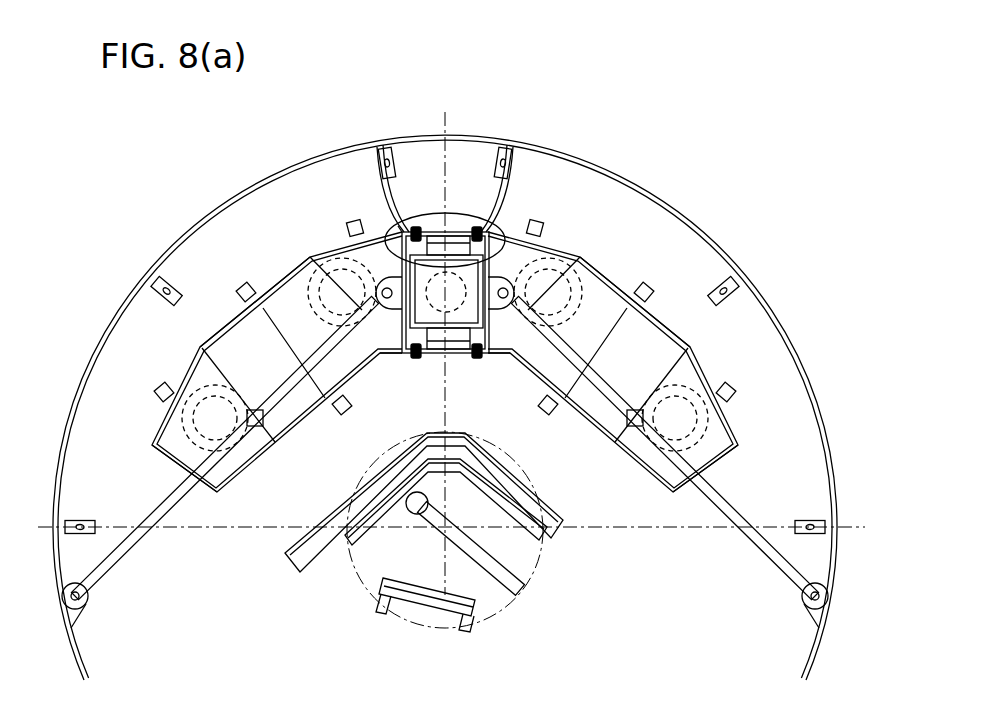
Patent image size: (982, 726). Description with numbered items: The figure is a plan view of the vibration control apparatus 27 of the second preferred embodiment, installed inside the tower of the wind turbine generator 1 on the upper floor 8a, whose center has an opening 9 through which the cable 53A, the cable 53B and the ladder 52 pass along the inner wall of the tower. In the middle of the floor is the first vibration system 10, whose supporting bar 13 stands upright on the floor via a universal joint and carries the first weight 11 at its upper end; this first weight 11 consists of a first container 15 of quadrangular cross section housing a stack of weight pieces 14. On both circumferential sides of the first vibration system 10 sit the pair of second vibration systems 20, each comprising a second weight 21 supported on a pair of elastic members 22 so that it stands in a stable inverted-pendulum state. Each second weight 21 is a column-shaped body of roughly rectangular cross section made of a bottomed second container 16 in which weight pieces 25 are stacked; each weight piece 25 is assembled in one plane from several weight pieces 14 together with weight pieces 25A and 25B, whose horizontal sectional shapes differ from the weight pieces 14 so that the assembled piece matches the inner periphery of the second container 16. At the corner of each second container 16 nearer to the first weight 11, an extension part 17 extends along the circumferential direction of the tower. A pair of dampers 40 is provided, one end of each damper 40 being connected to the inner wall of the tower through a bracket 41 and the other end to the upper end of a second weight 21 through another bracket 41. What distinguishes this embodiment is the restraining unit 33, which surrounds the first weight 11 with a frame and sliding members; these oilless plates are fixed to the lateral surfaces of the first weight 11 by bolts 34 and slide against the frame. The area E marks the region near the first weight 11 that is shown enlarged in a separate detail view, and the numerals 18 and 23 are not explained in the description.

The wind turbine generator 1 is at (679, 153).
The upper floor 8a is at (265, 665).
The opening 9 is at (390, 565).
The first vibration system 10 is at (453, 247).
The first weight 11 is at (492, 246).
The supporting bar 13 is at (414, 355).
The weight pieces 14 is at (277, 322).
The first container 15 is at (478, 362).
The second container 16 is at (226, 316).
The extension part 17 is at (392, 165).
The lower left joint 18 is at (386, 362).
The second vibration systems 20 is at (449, 345).
The second weight 21 is at (260, 262).
The elastic members 22 is at (348, 232).
The upper plate 23 is at (458, 240).
The weight pieces 25 is at (220, 350).
The weight piece 25A is at (362, 160).
The weight piece 25B is at (172, 455).
The vibration control apparatus 27 is at (473, 163).
The restraining unit 33 is at (433, 222).
The bolts 34 is at (376, 290).
The dampers 40 is at (150, 532).
The bracket 41 is at (84, 609).
The ladder 52 is at (414, 598).
The cable 53A is at (530, 543).
The cable 53B is at (513, 566).
The area E is at (398, 226).